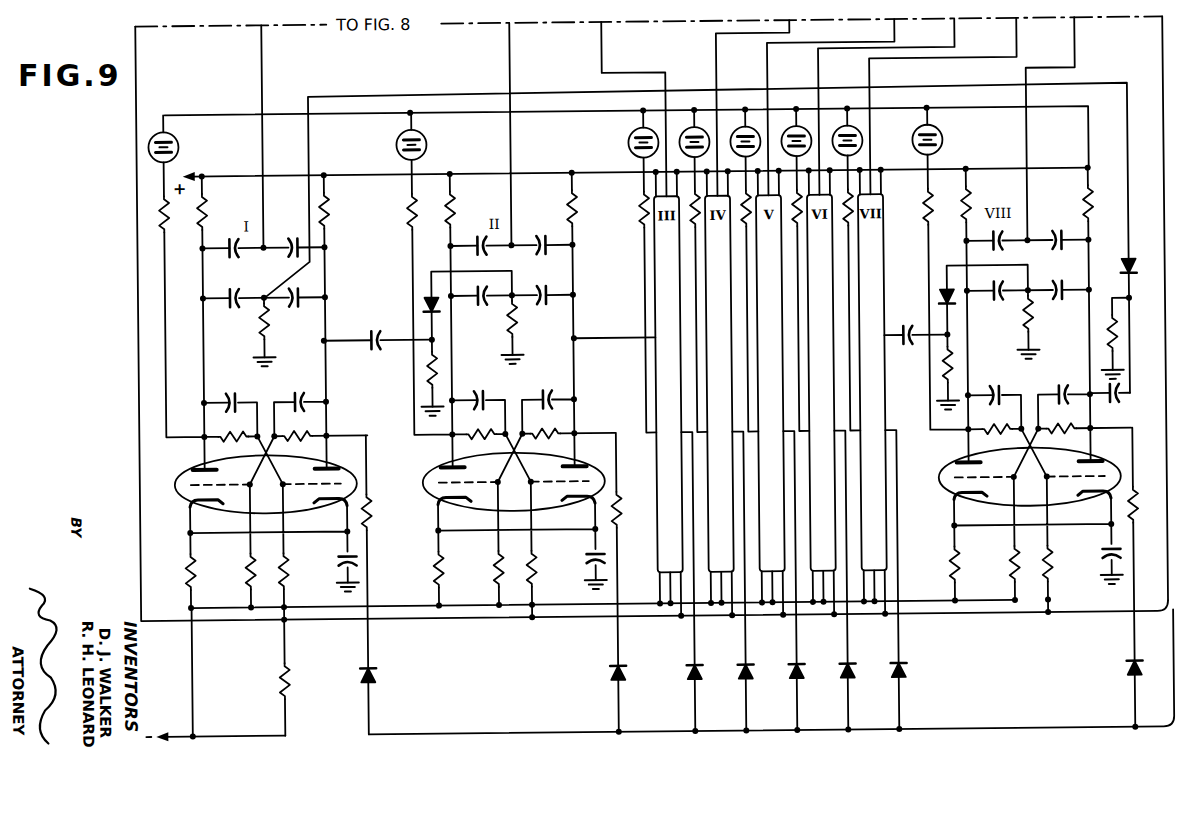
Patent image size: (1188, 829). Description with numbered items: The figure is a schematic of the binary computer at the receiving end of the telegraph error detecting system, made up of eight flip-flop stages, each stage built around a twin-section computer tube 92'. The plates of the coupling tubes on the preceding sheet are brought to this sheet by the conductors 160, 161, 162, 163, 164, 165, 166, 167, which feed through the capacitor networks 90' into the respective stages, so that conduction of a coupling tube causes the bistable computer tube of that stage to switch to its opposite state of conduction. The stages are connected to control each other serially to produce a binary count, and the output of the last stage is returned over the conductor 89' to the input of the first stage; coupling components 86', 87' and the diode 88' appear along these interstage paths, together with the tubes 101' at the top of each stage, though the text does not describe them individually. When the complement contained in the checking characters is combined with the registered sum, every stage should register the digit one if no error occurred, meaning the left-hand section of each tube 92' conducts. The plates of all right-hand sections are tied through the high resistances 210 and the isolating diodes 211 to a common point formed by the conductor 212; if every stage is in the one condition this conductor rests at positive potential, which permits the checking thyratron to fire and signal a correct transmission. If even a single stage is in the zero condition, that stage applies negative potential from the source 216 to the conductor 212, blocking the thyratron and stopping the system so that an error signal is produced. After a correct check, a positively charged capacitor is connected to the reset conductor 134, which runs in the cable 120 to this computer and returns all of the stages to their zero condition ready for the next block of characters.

The reset conductor 134 is at (139, 74).
The conductor 160 is at (265, 73).
The conductor 161 is at (513, 63).
The conductor 162 is at (605, 66).
The conductor 163 is at (719, 62).
The conductor 164 is at (898, 42).
The conductor 165 is at (958, 47).
The conductor 166 is at (1020, 54).
The conductor 167 is at (1078, 54).
The cable 120 is at (1166, 58).
The tube 101' is at (570, 143).
The conductor 89' is at (697, 233).
The capacitor network 90' is at (645, 269).
The capacitor 86' is at (725, 379).
The resistor 87' is at (744, 341).
The diode 88' is at (1116, 248).
The twin-section computer tube 92' is at (648, 486).
The high resistance 210 is at (367, 508).
The isolating diode 211 is at (367, 679).
The conductor 212 is at (528, 732).
The source 216 is at (164, 734).